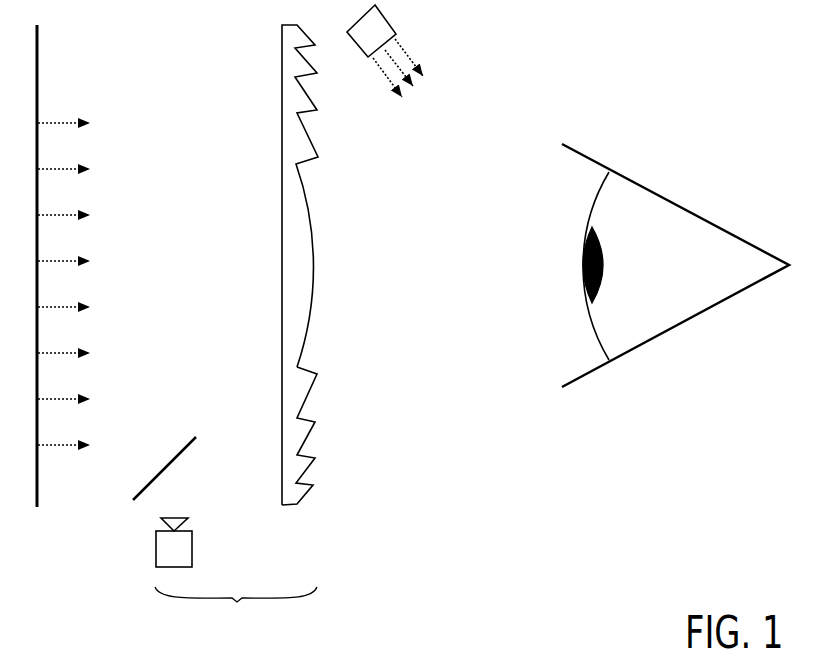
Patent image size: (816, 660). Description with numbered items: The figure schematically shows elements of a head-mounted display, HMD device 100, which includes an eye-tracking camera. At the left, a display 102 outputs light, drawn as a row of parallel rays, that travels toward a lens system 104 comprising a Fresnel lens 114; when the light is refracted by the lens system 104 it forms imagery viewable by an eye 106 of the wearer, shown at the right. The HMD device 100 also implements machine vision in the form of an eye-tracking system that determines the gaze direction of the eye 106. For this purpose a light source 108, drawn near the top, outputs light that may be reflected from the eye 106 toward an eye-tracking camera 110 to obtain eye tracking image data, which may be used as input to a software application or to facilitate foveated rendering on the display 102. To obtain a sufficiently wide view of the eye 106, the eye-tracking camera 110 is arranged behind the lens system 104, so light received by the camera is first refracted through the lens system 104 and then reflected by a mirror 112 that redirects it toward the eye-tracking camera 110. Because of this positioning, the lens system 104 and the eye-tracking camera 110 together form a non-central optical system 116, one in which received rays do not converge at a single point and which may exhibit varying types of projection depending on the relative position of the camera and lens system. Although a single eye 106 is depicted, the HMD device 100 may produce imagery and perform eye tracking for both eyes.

The HMD device 100 is at (473, 498).
The display 102 is at (38, 43).
The lens system 104 is at (323, 303).
The eye 106 is at (678, 327).
The light source 108 is at (390, 18).
The eye-tracking camera 110 is at (156, 542).
The mirror 112 is at (179, 457).
The Fresnel lens 114 is at (313, 425).
The non-central optical system 116 is at (236, 608).